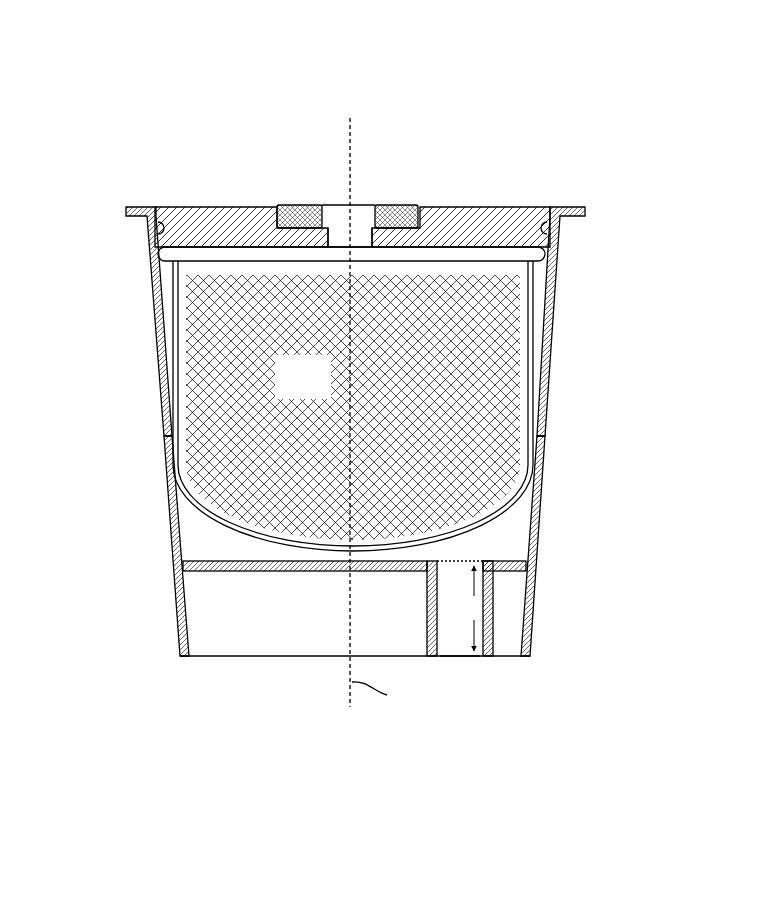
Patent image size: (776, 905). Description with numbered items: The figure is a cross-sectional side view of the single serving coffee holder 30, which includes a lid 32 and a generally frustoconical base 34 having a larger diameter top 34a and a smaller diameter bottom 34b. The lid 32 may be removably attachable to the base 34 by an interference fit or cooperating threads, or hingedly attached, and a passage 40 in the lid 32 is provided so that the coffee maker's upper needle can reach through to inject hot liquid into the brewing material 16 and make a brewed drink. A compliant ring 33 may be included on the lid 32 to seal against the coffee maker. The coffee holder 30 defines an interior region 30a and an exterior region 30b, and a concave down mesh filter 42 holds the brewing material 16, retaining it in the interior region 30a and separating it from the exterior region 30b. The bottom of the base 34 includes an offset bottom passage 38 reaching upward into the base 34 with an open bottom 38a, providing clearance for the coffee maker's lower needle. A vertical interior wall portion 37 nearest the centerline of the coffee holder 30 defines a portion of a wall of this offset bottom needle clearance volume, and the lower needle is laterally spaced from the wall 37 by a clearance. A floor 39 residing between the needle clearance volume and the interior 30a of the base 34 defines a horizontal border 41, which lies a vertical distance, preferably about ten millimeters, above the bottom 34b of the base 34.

The single serving coffee holder 30 is at (306, 150).
The interior region 30a is at (212, 275).
The exterior region 30b is at (110, 399).
The lid 32 is at (503, 207).
The compliant ring 33 is at (292, 205).
The base 34 is at (550, 405).
The larger diameter top 34a is at (560, 250).
The smaller diameter bottom 34b is at (535, 615).
The brewing material 16 is at (318, 384).
The passage 40 is at (362, 236).
The horizontal border 41 is at (458, 561).
The concave down mesh filter 42 is at (520, 490).
The vertical interior wall portion 37 is at (437, 628).
The offset bottom passage 38 is at (462, 665).
The open bottom 38a is at (452, 657).
The floor 39 is at (303, 567).